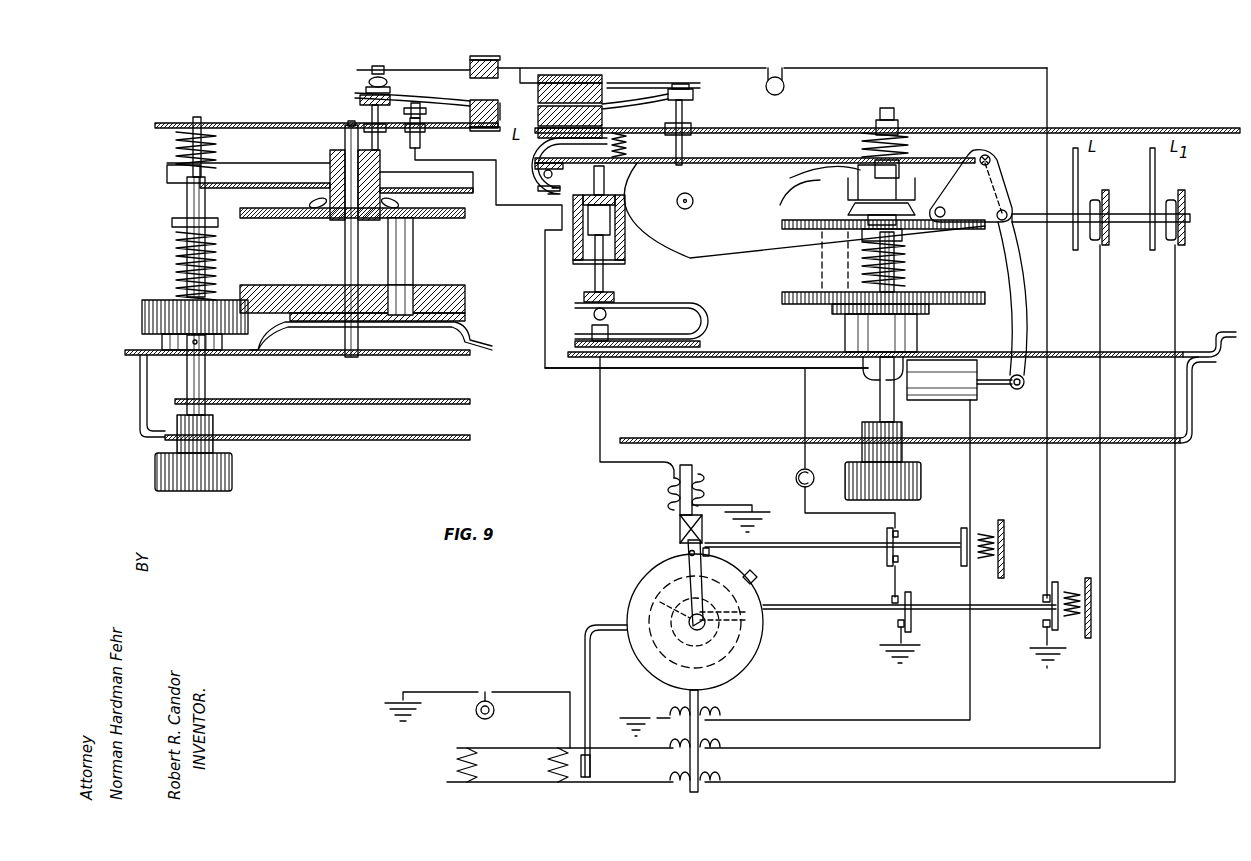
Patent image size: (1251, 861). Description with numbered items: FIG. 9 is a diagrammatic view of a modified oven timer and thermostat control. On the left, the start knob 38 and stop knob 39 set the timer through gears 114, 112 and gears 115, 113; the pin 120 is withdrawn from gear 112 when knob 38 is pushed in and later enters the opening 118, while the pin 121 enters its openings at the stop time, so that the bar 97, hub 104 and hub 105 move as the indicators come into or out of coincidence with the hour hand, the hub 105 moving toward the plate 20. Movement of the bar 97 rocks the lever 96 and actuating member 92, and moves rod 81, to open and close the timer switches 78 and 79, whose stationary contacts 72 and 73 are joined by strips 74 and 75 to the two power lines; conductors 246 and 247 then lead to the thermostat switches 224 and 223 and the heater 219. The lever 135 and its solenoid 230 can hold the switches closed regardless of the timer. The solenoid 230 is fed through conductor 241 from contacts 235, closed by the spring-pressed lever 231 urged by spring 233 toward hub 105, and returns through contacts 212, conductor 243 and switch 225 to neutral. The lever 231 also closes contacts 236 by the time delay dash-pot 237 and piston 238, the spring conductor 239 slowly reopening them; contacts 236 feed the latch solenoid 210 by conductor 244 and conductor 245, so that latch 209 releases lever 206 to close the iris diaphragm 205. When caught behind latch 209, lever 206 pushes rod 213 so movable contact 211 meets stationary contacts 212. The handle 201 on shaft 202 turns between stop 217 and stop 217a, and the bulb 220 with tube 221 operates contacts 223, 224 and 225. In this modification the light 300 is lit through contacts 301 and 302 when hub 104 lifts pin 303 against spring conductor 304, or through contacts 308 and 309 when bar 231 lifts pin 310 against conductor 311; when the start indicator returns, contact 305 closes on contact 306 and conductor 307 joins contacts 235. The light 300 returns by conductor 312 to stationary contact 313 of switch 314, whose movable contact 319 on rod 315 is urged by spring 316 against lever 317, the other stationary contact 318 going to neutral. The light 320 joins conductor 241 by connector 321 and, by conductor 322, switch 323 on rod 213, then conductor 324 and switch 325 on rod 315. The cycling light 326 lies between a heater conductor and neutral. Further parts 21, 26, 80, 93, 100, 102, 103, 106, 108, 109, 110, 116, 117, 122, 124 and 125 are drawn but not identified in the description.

The plate 20 is at (226, 355).
The top plate 21 is at (220, 124).
The lower plate 26 is at (338, 440).
The start knob 38 is at (232, 480).
The stop knob 39 is at (921, 478).
The stationary contact 72 is at (1094, 200).
The stationary contact 73 is at (1172, 200).
The strip 74 is at (1073, 192).
The strip 75 is at (1151, 192).
The timer controlled switch 78 is at (1095, 243).
The timer controlled switch 79 is at (1170, 243).
The contact block 80 is at (1110, 200).
The rod 81 is at (1186, 202).
The actuating member 92 is at (1001, 178).
The pivot 93 is at (990, 158).
The lever 96 is at (738, 235).
The bar 97 is at (255, 180).
The shaft 100 is at (195, 117).
The spring 102 is at (176, 140).
The spring 103 is at (862, 140).
The hub 104 is at (332, 162).
The hub 105 is at (840, 170).
The pin 106 is at (312, 200).
The shaft 108 is at (345, 252).
The shaft 109 is at (896, 112).
The plate 110 is at (255, 218).
The gear 112 is at (268, 290).
The gear 113 is at (946, 292).
The gear 114 is at (142, 316).
The gear 115 is at (928, 310).
The spring 116 is at (466, 342).
The bracket 117 is at (810, 350).
The opening 118 is at (405, 308).
The pin 120 is at (402, 252).
The pin 121 is at (822, 262).
The collar 122 is at (172, 221).
The spring 124 is at (176, 262).
The spring 125 is at (897, 260).
The lever 135 is at (1006, 250).
The handle 201 is at (699, 603).
The shaft 202 is at (702, 629).
The iris diaphragm 205 is at (627, 600).
The lever 206 is at (686, 536).
The latch 209 is at (680, 520).
The latch solenoid 210 is at (693, 492).
The movable switch contact 211 is at (960, 534).
The stationary contacts 212 is at (972, 526).
The rod 213 is at (802, 548).
The stop 217 is at (757, 577).
The stop 217a is at (710, 552).
The heater 219 is at (565, 783).
The thermostatic liquid-containing bulb 220 is at (591, 767).
The tube 221 is at (584, 665).
The contact 223 is at (690, 760).
The switch 224 is at (718, 742).
The switch 225 is at (676, 706).
The solenoid 230 is at (920, 400).
The spring-pressed lever 231 is at (745, 160).
The spring 233 is at (628, 152).
The contacts 235 is at (556, 183).
The contacts 236 is at (612, 320).
The time delay dash-pot 237 is at (626, 242).
The piston 238 is at (595, 250).
The spring conductor 239 is at (656, 302).
The conductor 241 is at (665, 369).
The conductor 243 is at (971, 680).
The conductor 244 is at (599, 417).
The conductor 245 is at (735, 504).
The conductor 246 is at (1101, 542).
The conductor 247 is at (1176, 542).
The combined timer and thermostat indicating light 300 is at (784, 86).
The contact 301 is at (372, 70).
The contact 302 is at (388, 82).
The pin 303 is at (372, 112).
The spring conductor 304 is at (357, 95).
The contact 305 is at (420, 110).
The contact 306 is at (421, 144).
The conductor 307 is at (510, 205).
The contact 308 is at (690, 87).
The contact 309 is at (693, 97).
The pin 310 is at (688, 118).
The spring conductor 311 is at (603, 106).
The conductor 312 is at (1048, 112).
The stationary contact 313 is at (1055, 596).
The switch 314 is at (1042, 612).
The rod 315 is at (822, 605).
The spring 316 is at (1086, 620).
The lever 317 is at (675, 623).
The stationary contact 318 is at (1042, 628).
The movable contact 319 is at (1072, 590).
The thermostat and non-timer indicating light 320 is at (797, 476).
The connector 321 is at (805, 388).
The conductor 322 is at (807, 514).
The switch 323 is at (900, 535).
The conductor 324 is at (898, 578).
The switch 325 is at (896, 621).
The cycling light 326 is at (494, 712).